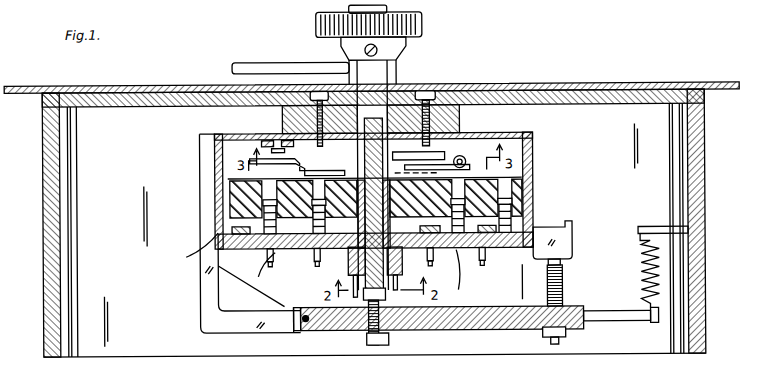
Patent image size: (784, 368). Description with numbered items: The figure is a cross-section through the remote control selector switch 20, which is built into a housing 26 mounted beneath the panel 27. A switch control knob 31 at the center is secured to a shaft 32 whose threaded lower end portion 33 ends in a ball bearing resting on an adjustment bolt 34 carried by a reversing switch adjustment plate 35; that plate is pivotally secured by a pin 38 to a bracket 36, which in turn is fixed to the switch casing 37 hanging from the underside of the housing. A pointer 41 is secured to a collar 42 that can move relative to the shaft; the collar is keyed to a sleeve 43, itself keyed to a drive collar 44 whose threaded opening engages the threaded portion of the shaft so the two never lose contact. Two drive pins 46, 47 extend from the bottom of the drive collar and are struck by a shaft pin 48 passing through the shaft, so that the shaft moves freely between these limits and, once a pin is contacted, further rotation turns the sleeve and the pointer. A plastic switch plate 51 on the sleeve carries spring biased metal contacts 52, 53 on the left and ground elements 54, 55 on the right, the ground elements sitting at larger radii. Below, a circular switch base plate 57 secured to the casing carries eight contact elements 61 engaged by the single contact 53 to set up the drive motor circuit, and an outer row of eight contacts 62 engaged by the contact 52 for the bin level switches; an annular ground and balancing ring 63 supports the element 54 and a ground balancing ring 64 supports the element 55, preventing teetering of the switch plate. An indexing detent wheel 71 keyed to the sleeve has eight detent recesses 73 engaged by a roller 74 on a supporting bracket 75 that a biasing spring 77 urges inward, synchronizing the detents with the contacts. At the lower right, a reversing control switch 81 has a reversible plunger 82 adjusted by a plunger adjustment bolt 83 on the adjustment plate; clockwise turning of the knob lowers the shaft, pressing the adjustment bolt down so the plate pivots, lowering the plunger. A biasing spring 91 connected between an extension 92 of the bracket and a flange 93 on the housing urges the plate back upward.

The remote control selector switch 20 is at (382, 191).
The housing 26 is at (706, 202).
The panel 27 is at (667, 86).
The switch control knob 31 is at (425, 27).
The shaft 32 is at (460, 157).
The threaded lower end portion 33 is at (385, 292).
The adjustment bolt 34 is at (385, 336).
The reversing switch adjustment plate 35 is at (462, 328).
The bracket 36 is at (204, 290).
The switch casing 37 is at (334, 180).
The pin 38 is at (300, 330).
The pointer 41 is at (268, 62).
The collar 42 is at (398, 78).
The sleeve 43 is at (400, 125).
The drive collar 44 is at (347, 260).
The drive pin 46 is at (352, 302).
The drive pin 47 is at (401, 278).
The shaft pin 48 is at (366, 302).
The plastic switch plate 51 is at (229, 192).
The spring biased metal contact 52 is at (222, 226).
The spring biased metal contact 53 is at (346, 261).
The ground element 54 is at (456, 250).
The ground element 55 is at (522, 222).
The switch base plate 57 is at (565, 235).
The contact elements 61 is at (300, 254).
The contacts 62 is at (262, 256).
The annular ground and balancing ring 63 is at (362, 276).
The ground balancing ring 64 is at (560, 214).
The indexing detent wheel 71 is at (338, 85).
The detent recesses 73 is at (297, 160).
The roller 74 is at (700, 364).
The supporting bracket 75 is at (265, 146).
The biasing spring 77 is at (478, 137).
The reversing control switch 81 is at (566, 250).
The reversible plunger 82 is at (566, 256).
The plunger adjustment bolt 83 is at (562, 296).
The biasing spring 91 is at (661, 272).
The extension 92 is at (660, 316).
The flange 93 is at (690, 230).